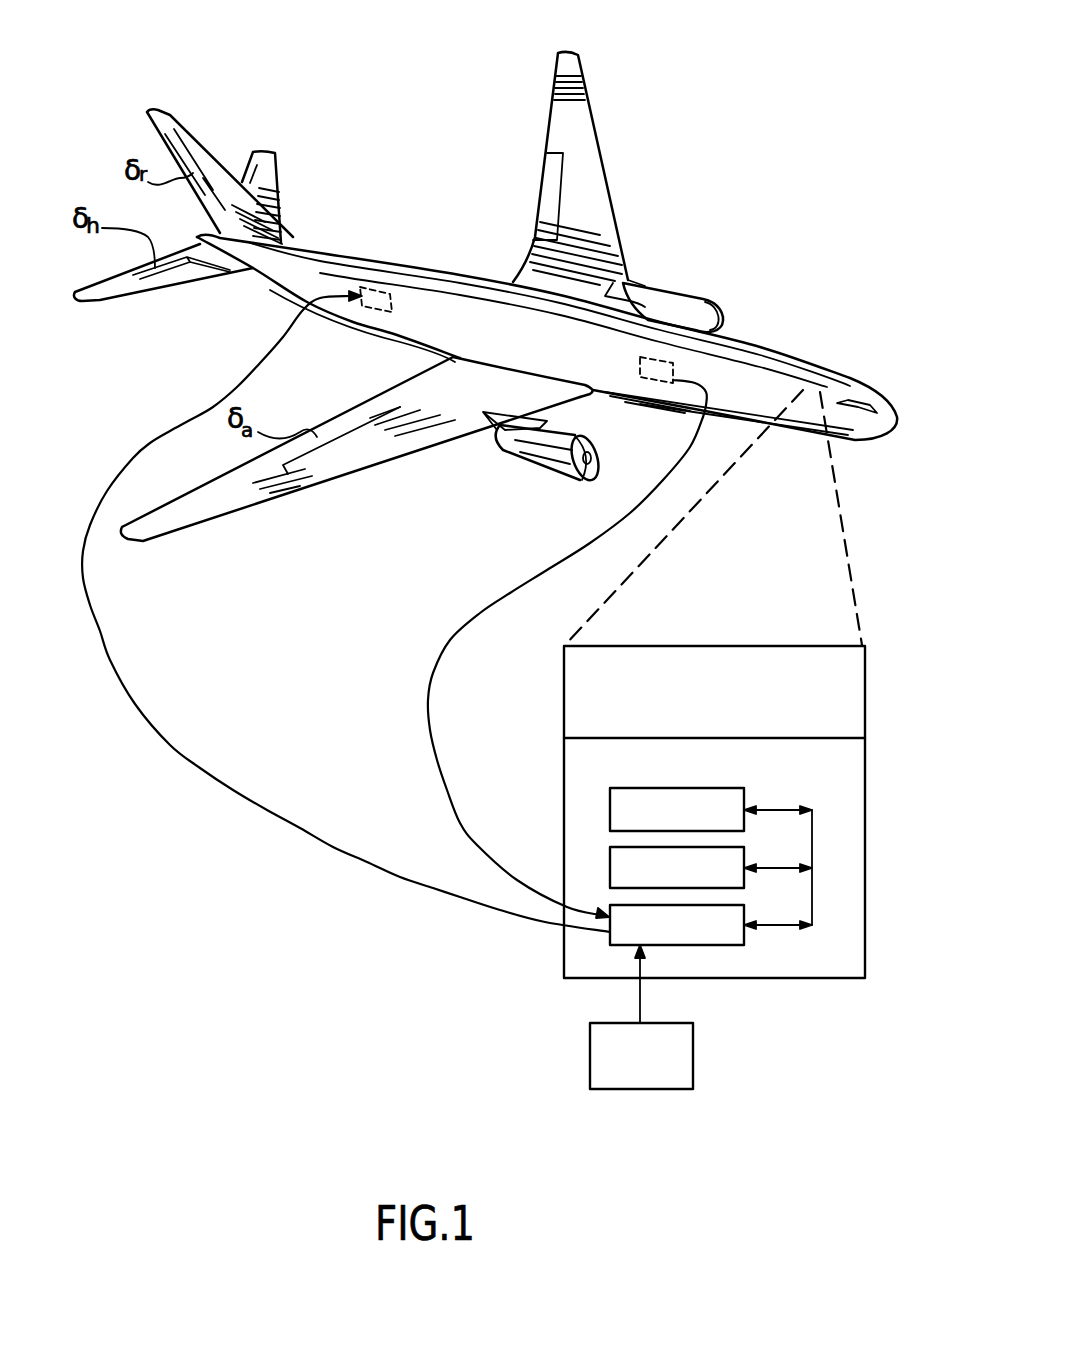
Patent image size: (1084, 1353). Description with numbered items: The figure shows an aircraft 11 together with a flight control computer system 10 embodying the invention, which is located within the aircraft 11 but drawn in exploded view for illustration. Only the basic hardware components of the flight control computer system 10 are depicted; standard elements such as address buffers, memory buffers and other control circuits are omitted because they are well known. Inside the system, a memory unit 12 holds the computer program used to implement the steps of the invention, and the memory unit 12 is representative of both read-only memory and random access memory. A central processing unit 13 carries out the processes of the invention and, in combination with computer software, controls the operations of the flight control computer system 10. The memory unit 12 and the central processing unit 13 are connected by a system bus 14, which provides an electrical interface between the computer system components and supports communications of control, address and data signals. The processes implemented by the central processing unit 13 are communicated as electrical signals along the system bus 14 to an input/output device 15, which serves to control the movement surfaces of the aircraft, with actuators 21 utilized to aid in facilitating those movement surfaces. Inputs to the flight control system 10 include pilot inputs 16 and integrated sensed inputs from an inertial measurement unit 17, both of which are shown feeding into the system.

The flight control computer system 10 is at (865, 690).
The aircraft 11 is at (440, 267).
The memory unit 12 is at (610, 806).
The central processing unit (CPU) 13 is at (610, 868).
The system bus 14 is at (812, 907).
The input/output device 15 is at (697, 947).
The pilot inputs 16 is at (667, 1089).
The inertial measurement unit (IMU) 17 is at (673, 367).
The actuators (ACT) 21 is at (380, 312).